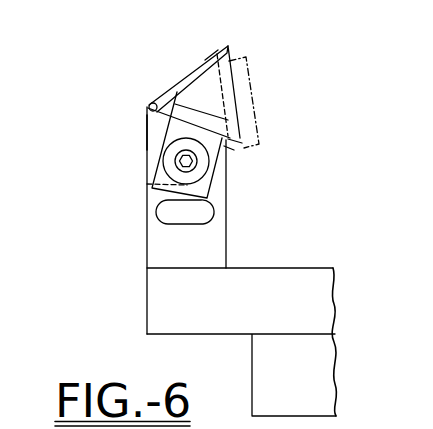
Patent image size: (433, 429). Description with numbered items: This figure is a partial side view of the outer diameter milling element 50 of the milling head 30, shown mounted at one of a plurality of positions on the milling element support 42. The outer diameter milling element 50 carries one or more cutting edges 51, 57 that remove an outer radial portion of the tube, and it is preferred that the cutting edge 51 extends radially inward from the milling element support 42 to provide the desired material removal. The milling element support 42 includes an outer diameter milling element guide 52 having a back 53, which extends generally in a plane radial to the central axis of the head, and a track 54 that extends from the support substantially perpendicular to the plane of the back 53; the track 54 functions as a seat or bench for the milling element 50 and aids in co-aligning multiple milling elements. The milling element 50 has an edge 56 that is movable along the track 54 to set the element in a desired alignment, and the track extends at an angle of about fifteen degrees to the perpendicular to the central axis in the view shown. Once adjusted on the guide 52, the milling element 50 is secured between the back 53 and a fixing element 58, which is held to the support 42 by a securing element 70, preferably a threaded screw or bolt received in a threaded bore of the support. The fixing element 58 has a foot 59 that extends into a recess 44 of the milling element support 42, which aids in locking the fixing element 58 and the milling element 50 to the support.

The milling head 30 is at (146, 314).
The milling element support 42 is at (147, 237).
The recess 44 is at (158, 202).
The outer diameter milling element 50 is at (195, 72).
The cutting edge 51 is at (238, 97).
The outer diameter milling element guide 52 is at (146, 128).
The back 53 is at (177, 82).
The track 54 is at (150, 104).
The edge 56 is at (237, 140).
The cutting edge 57 is at (212, 52).
The fixing element 58 is at (231, 150).
The foot 59 is at (147, 184).
The securing element 70 is at (168, 163).